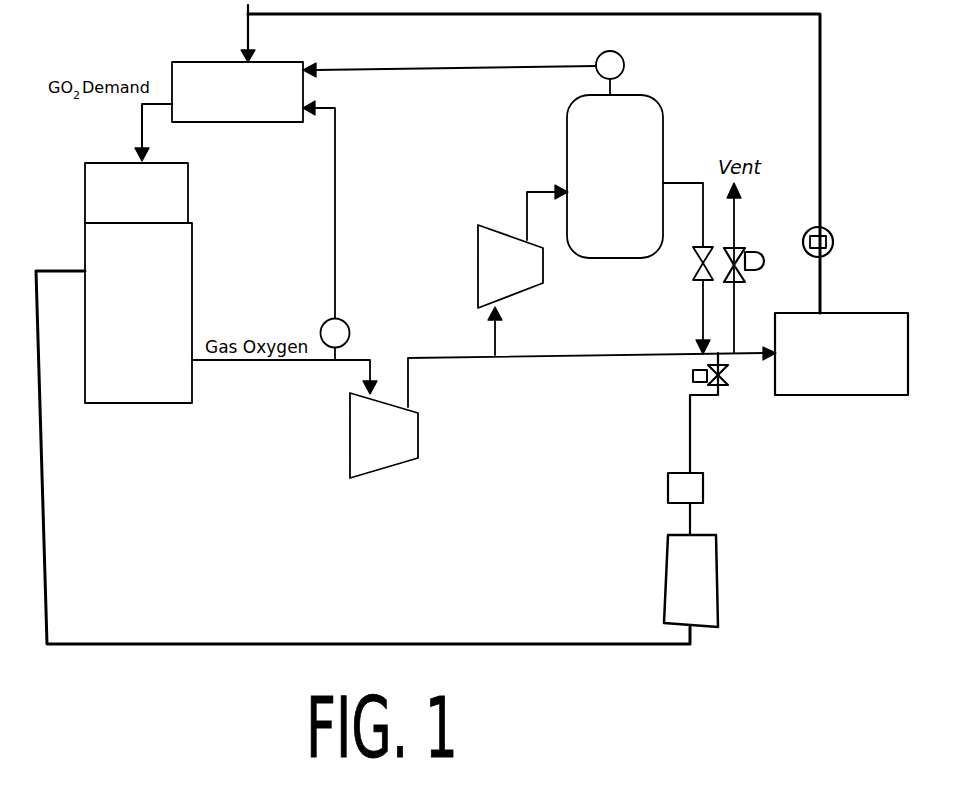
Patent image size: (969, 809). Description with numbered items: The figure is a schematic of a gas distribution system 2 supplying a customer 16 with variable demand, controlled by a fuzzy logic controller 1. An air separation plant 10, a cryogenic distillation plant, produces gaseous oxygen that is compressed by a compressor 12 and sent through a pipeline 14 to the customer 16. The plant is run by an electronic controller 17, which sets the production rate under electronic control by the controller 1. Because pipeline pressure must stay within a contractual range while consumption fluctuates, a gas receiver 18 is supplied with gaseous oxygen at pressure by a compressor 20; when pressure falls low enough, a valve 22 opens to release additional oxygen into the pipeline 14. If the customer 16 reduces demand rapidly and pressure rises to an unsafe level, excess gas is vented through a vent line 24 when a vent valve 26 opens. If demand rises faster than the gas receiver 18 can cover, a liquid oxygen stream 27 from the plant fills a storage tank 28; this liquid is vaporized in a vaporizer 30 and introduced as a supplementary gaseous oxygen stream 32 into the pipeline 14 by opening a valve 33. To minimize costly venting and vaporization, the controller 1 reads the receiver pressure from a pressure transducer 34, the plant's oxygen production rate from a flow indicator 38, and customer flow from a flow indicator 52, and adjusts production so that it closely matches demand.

The controller 1 is at (278, 63).
The gas distribution system 2 is at (568, 412).
The air separation plant 10 is at (155, 384).
The compressor 12 is at (350, 440).
The pipeline 14 is at (748, 357).
The customer 16 is at (836, 380).
The electronic controller 17 is at (190, 197).
The gas receiver 18 is at (640, 118).
The compressor 20 is at (525, 275).
The valve 22 is at (692, 272).
The vent line 24 is at (740, 300).
The vent valve 26 is at (745, 256).
The liquid oxygen stream 27 is at (641, 646).
The storage tank 28 is at (705, 608).
The vaporizer 30 is at (668, 480).
The supplementary gaseous oxygen stream 32 is at (680, 387).
The valve 33 is at (687, 369).
The pressure transducer 34 is at (621, 56).
The flow indicator 38 is at (348, 320).
The flow indicator 52 is at (834, 238).